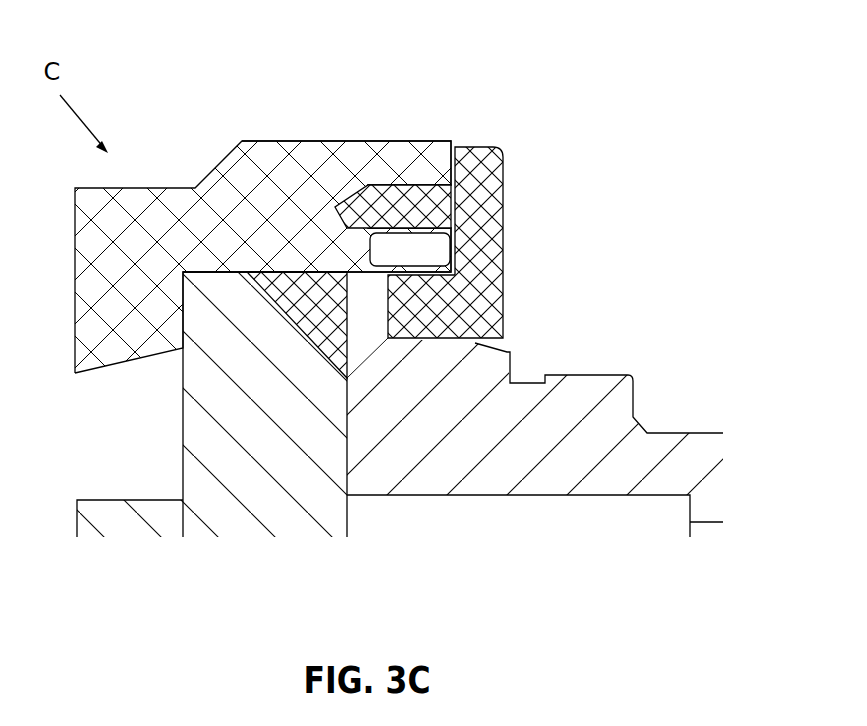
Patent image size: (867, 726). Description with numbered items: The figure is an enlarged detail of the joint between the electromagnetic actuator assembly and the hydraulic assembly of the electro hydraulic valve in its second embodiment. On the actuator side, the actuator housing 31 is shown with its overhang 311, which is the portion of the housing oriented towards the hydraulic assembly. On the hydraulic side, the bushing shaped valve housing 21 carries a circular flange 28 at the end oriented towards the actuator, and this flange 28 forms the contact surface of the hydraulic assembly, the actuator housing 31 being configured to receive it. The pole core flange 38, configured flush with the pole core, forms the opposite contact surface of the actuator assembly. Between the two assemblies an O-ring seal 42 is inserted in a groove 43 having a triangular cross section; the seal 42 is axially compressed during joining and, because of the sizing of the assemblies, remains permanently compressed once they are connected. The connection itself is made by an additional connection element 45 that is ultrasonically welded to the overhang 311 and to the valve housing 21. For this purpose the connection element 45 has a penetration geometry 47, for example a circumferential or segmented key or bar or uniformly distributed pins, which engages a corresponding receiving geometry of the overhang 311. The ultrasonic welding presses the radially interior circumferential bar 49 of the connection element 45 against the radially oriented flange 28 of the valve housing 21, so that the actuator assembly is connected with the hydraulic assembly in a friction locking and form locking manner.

The valve housing 21 is at (580, 457).
The circular flange 28 is at (365, 299).
The actuator housing 31 is at (110, 253).
The overhang 311 is at (393, 152).
The pole core flange 38 is at (227, 410).
The O-ring seal 42 is at (315, 303).
The groove 43 is at (255, 272).
The connection element 45 is at (483, 220).
The penetration geometry 47 is at (397, 202).
The radially interior circumferential bar 49 is at (435, 318).